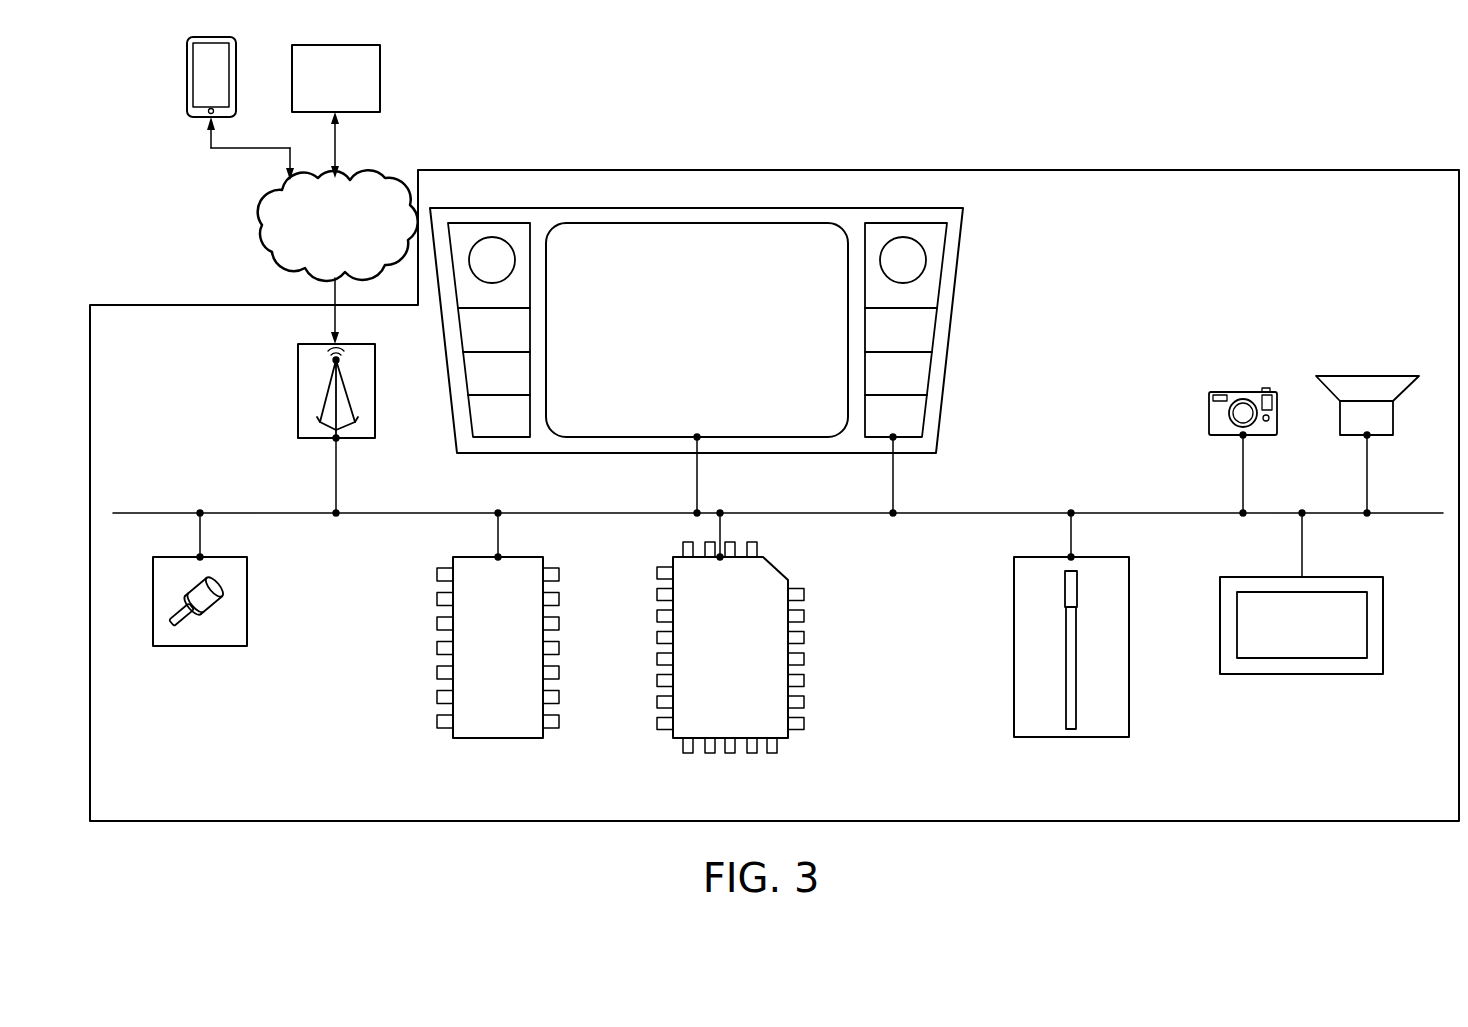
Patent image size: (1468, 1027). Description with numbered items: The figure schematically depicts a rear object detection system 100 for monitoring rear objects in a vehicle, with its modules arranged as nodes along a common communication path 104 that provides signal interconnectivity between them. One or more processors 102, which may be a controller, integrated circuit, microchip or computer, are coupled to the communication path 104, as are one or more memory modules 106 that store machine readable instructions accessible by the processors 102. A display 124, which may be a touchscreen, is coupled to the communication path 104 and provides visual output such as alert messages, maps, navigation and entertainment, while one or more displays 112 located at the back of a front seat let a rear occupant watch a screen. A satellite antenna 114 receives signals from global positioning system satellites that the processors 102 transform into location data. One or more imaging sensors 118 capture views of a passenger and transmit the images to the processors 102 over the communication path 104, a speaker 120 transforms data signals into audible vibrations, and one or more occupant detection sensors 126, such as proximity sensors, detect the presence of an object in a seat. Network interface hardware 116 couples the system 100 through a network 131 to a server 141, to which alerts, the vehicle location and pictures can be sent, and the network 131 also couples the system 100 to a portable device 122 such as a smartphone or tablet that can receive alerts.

The rear object detection system 100 is at (1242, 138).
The processor 102 is at (680, 740).
The communication path 104 is at (393, 515).
The memory module 106 is at (500, 740).
The display 112 is at (1302, 676).
The satellite antenna 114 is at (1073, 740).
The network interface hardware 116 is at (297, 353).
The imaging sensor 118 is at (1246, 390).
The speaker 120 is at (1368, 376).
The portable device 122 is at (185, 77).
The display 124 is at (683, 248).
The occupant detection sensor 126 is at (197, 647).
The network 131 is at (257, 220).
The server 141 is at (383, 80).